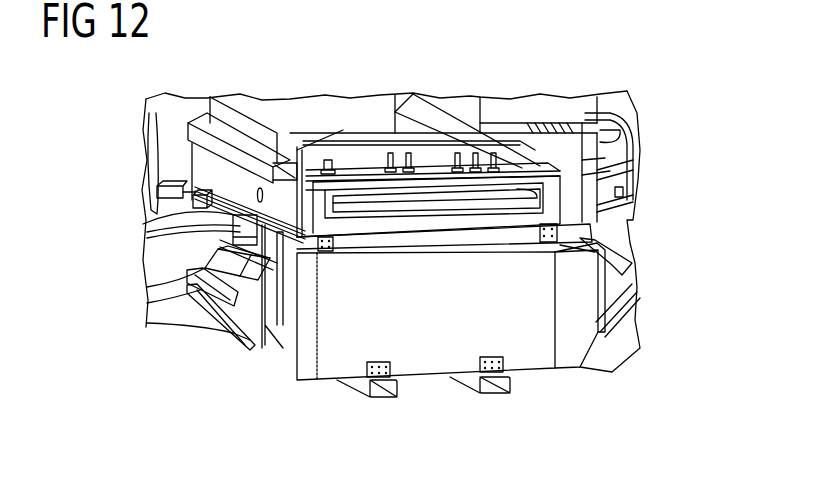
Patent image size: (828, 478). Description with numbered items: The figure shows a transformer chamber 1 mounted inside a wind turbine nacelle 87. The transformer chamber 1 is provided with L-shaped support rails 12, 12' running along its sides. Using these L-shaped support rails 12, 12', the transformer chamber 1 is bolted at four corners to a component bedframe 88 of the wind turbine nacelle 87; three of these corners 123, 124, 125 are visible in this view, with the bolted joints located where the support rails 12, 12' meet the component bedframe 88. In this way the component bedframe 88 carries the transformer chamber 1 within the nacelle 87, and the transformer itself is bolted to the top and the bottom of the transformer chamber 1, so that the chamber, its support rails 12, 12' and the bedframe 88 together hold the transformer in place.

The transformer chamber 1 is at (575, 374).
The L-shaped support rail 12 is at (468, 309).
The L-shaped support rail 12' is at (156, 164).
The wind turbine nacelle 87 is at (130, 228).
The component bedframe 88 is at (575, 188).
The corner 123 is at (318, 212).
The corner 124 is at (262, 340).
The corner 125 is at (592, 214).